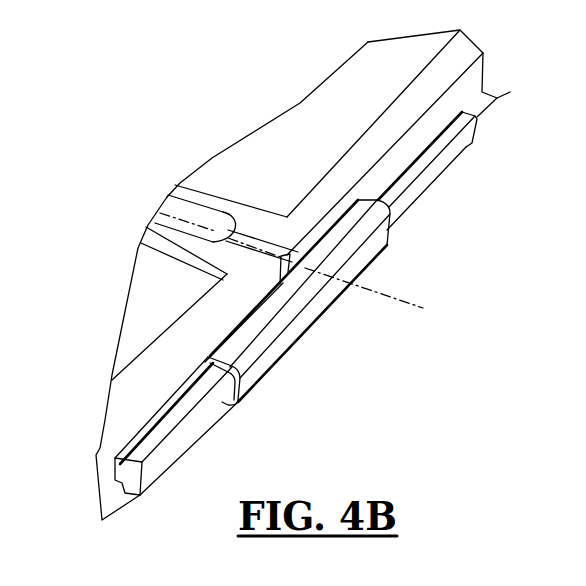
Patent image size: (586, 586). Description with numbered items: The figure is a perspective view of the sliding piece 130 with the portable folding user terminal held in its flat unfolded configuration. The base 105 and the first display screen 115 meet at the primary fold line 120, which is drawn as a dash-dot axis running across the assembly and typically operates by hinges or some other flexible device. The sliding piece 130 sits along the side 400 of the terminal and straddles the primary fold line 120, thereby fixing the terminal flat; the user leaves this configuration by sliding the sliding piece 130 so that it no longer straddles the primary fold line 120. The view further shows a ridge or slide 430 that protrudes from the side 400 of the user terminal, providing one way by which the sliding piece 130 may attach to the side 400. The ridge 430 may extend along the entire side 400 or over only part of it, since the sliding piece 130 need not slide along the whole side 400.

The base 105 is at (219, 312).
The first display screen 115 is at (292, 184).
The primary fold line 120 is at (415, 305).
The sliding piece 130 is at (262, 371).
The side 400 is at (388, 162).
The ridge 430 is at (460, 147).